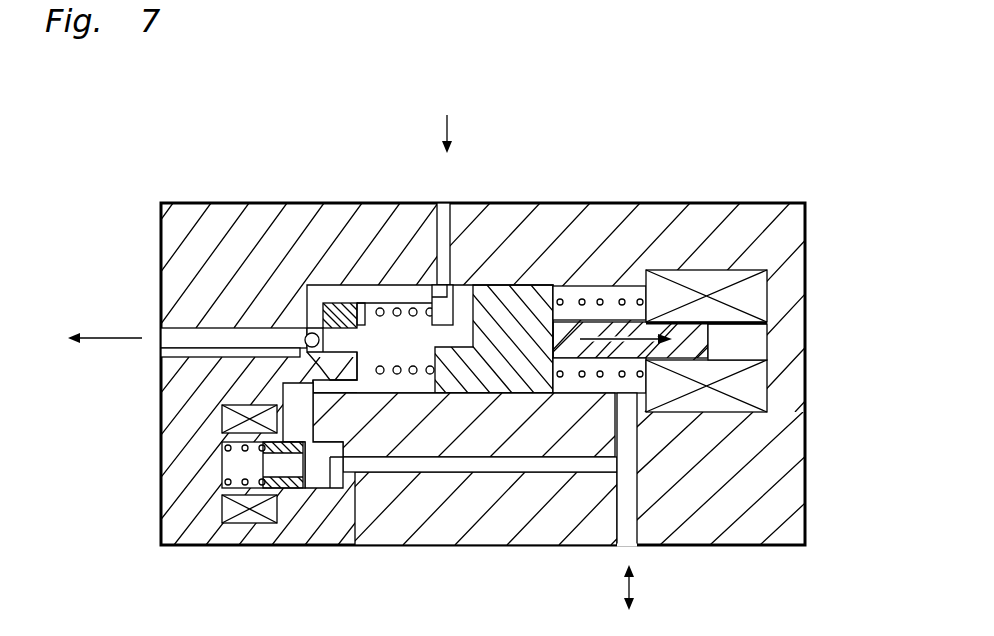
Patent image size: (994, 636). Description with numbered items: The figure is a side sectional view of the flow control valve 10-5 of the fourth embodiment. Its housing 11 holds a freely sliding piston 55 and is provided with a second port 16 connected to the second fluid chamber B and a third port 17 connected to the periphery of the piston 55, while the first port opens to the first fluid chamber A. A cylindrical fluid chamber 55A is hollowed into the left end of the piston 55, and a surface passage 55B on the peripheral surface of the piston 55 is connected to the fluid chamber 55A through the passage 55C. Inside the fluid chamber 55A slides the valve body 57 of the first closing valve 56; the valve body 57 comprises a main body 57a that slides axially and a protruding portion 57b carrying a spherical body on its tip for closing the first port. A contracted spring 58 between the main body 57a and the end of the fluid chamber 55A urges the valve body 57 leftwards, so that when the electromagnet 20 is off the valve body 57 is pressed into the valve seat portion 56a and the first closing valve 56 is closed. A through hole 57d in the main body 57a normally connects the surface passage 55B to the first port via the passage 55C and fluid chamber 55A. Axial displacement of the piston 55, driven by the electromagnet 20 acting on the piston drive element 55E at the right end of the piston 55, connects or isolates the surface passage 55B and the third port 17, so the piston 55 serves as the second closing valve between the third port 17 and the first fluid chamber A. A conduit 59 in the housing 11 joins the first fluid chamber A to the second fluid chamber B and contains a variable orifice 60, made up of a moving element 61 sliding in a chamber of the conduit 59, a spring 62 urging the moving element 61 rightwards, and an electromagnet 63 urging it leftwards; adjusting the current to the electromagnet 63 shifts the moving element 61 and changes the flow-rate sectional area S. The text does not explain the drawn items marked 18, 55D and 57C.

The flow control valve 10-5 is at (802, 174).
The housing 11 is at (160, 235).
The second port 16 is at (624, 545).
The third port 17 is at (455, 204).
The passage 18 is at (641, 395).
The electromagnet 20 is at (756, 378).
The piston 55 is at (560, 285).
The fluid chamber 55A is at (440, 302).
The surface passage 55B is at (537, 285).
The passage 55C is at (436, 300).
The spool passage 55D is at (313, 358).
The piston drive element 55E is at (617, 285).
The first closing valve 56 is at (372, 304).
The valve seat portion 56a is at (356, 304).
The valve body 57 is at (308, 305).
The main body 57a is at (343, 302).
The protruding portion 57b is at (333, 318).
The ball 57C is at (303, 322).
The through hole 57d is at (352, 382).
The spring 58 is at (404, 400).
The conduit 59 is at (500, 472).
The variable orifice 60 is at (252, 435).
The moving element 61 is at (288, 480).
The spring 62 is at (233, 468).
The electromagnet 63 is at (245, 522).
The first fluid chamber A is at (316, 353).
The second fluid chamber B is at (162, 346).
The flow-rate sectional area S is at (322, 472).